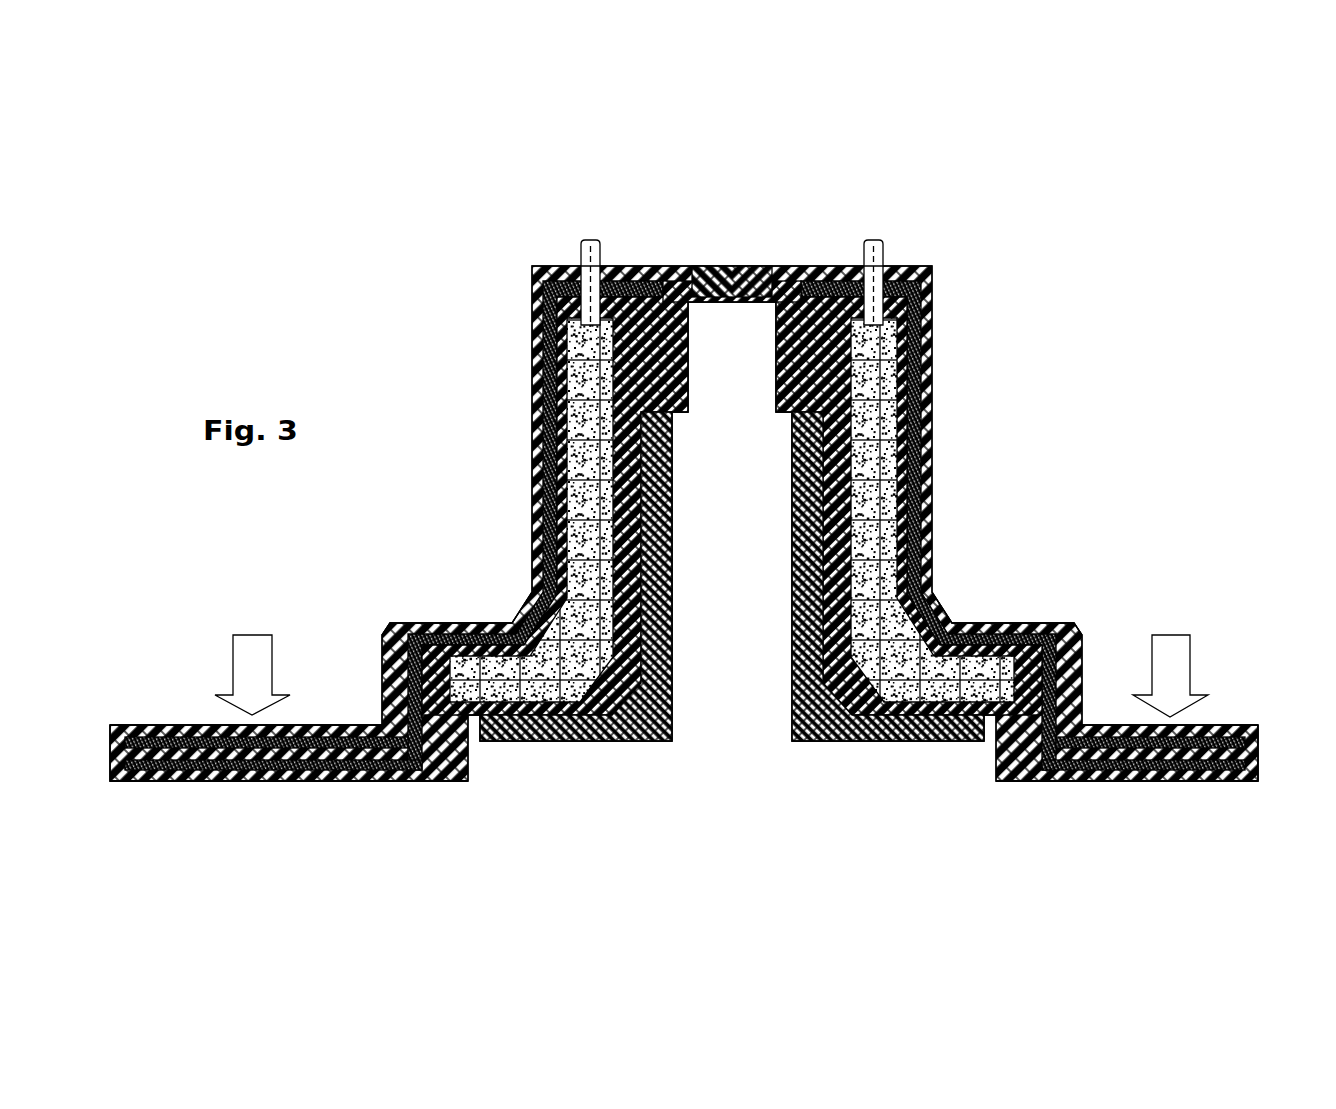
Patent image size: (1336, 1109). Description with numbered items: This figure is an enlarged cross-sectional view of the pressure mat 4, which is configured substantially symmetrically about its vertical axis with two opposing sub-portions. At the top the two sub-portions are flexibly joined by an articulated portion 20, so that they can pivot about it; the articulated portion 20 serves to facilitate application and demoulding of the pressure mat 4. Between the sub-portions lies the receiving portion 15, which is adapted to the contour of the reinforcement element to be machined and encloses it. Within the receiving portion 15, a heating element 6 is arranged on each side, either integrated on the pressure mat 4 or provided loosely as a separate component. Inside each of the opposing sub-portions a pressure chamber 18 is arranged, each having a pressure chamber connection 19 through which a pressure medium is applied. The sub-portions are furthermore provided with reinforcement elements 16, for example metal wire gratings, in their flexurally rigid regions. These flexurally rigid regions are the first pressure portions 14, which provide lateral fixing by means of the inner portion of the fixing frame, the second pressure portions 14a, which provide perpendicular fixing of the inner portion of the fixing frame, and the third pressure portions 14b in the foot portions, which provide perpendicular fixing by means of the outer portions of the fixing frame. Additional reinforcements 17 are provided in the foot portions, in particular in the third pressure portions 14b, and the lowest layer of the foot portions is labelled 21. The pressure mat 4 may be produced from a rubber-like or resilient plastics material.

The pressure mat 4 is at (1172, 311).
The heating element 6 is at (803, 758).
The first pressure portion 14 is at (535, 363).
The second pressure portion 14a is at (467, 610).
The third pressure portion 14b is at (335, 708).
The receiving portion 15 is at (828, 795).
The reinforcement element 16 is at (550, 478).
The additional reinforcement 17 is at (172, 726).
The pressure chamber 18 is at (592, 420).
The pressure chamber connection 19 is at (597, 250).
The articulated portion 20 is at (728, 270).
The bottom layer 21 is at (260, 782).